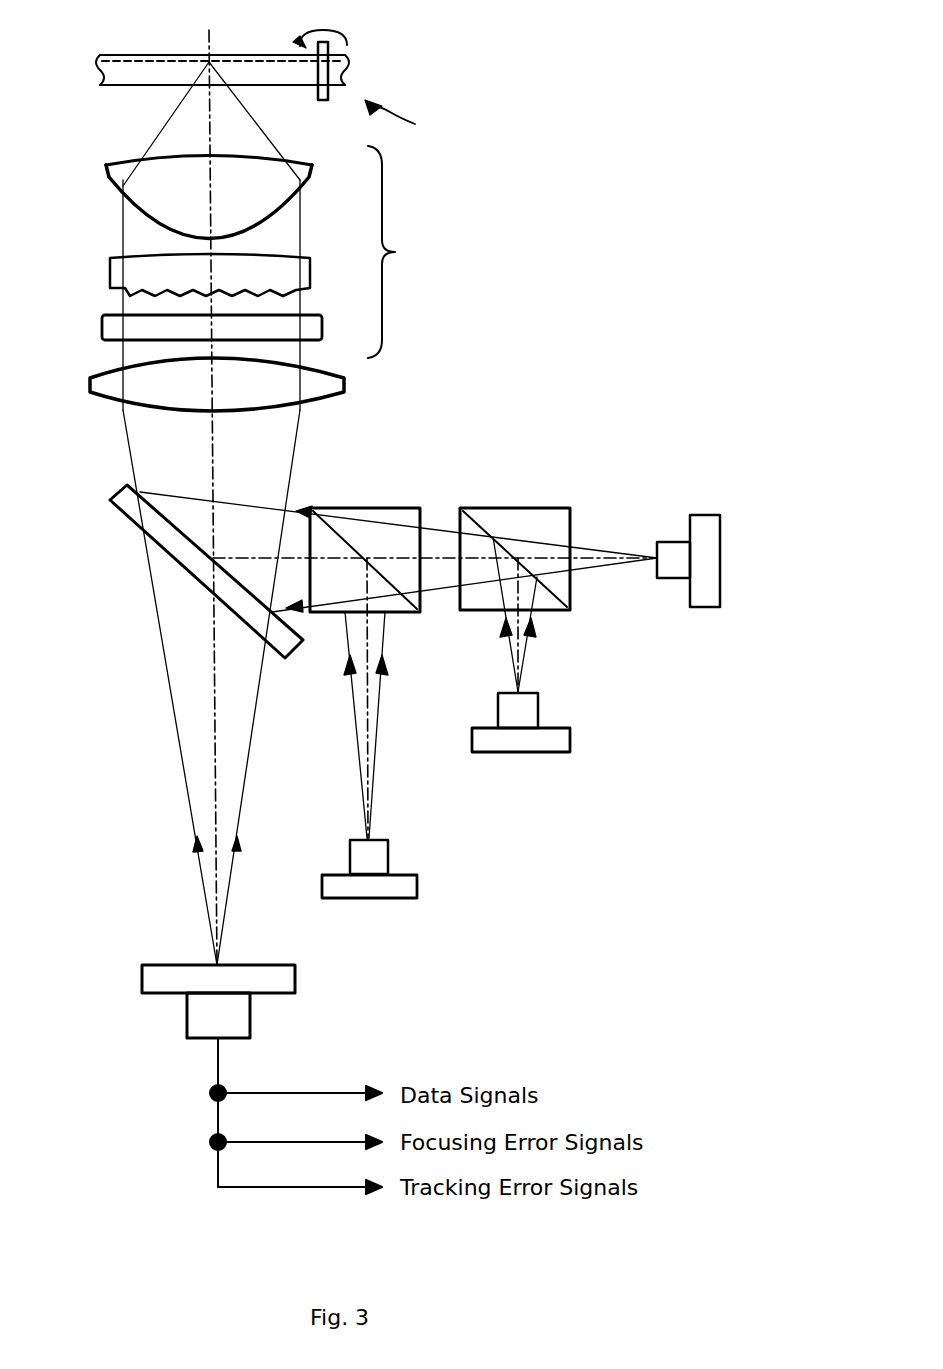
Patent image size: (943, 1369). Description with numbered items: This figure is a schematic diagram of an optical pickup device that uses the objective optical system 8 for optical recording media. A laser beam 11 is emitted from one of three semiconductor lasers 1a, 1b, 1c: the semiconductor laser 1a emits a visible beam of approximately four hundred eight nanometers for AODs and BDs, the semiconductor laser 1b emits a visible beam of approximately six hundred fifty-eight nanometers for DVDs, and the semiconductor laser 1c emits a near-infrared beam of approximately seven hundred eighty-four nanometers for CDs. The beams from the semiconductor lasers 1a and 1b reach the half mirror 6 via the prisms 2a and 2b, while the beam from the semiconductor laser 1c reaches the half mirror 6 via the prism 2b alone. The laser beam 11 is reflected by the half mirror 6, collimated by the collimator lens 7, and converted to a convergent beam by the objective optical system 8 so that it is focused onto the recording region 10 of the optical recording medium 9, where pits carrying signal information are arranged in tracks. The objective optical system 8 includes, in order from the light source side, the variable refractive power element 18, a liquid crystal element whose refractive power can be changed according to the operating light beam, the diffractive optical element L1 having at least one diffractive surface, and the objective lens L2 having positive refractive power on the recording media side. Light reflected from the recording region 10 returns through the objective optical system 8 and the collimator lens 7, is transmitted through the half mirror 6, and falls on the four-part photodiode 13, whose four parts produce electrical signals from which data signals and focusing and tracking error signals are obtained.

The recording area 10 is at (124, 57).
The objective lens L2 is at (112, 168).
The diffractive optical element L1 is at (110, 262).
The variable refractive power element 18 is at (102, 327).
The collimator lens 7 is at (342, 385).
The objective optical system 8 is at (391, 252).
The optical recording medium 9 is at (400, 125).
The half mirror 6 is at (120, 498).
The laser beam 11 is at (304, 509).
The prism 2b is at (394, 512).
The prism 2a is at (536, 512).
The semiconductor laser 1a is at (670, 542).
The semiconductor laser 1b is at (540, 707).
The semiconductor laser 1c is at (389, 853).
The four-part photodiode 13 is at (296, 978).